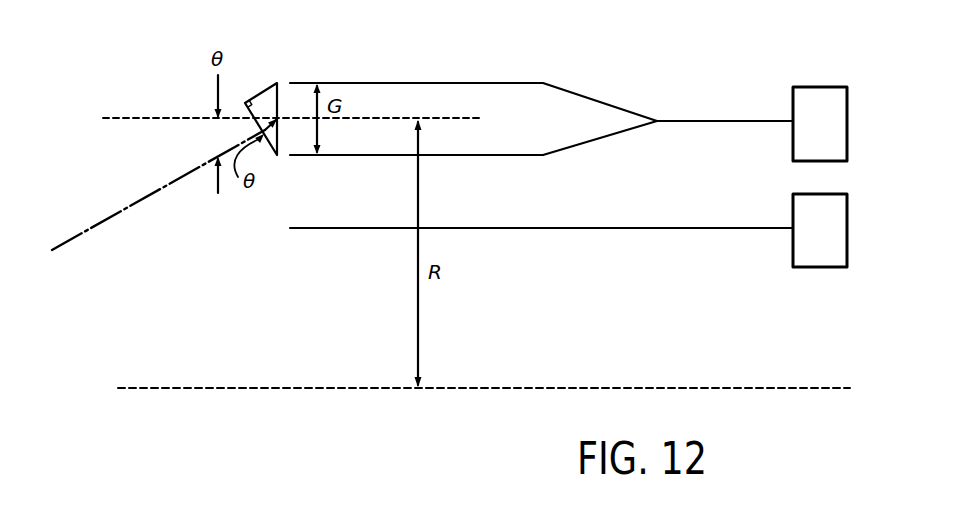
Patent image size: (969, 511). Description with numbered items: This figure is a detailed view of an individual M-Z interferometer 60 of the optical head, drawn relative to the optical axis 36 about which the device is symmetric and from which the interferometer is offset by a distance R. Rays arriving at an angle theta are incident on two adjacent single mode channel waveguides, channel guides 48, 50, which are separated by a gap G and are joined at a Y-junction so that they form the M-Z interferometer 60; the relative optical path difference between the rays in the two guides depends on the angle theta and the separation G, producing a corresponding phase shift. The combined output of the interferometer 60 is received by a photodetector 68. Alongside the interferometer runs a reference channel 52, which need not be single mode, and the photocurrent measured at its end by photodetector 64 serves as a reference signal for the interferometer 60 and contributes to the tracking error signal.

The optical axis 36 is at (330, 387).
The channel guide 48 is at (337, 82).
The channel guide 50 is at (345, 157).
The reference channel 52 is at (330, 229).
The M-Z interferometer 60 is at (464, 75).
The photodetector 64 is at (847, 220).
The photodetector 68 is at (847, 120).